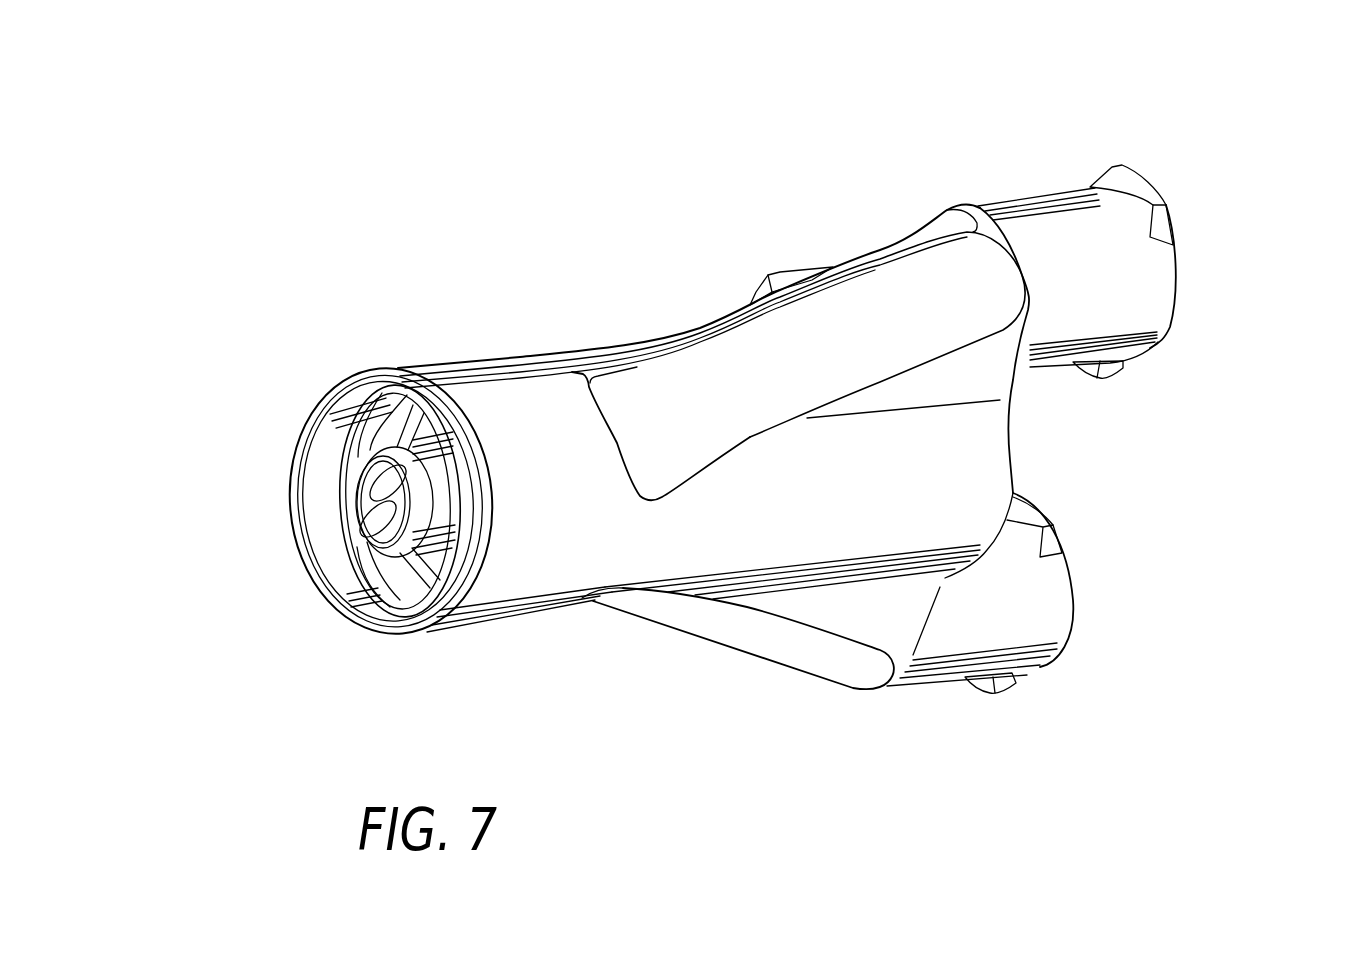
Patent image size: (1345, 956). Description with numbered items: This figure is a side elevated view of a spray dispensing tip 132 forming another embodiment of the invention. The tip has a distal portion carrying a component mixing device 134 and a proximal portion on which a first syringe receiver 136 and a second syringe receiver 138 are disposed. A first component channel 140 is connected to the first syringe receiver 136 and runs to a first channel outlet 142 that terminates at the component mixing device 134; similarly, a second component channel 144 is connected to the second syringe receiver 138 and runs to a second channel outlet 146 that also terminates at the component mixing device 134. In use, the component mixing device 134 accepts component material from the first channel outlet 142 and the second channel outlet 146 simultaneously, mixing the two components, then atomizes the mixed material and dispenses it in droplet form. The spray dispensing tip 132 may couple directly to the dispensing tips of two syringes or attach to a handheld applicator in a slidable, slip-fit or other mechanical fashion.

The spray dispensing tip 132 is at (295, 165).
The component mixing device 134 is at (322, 513).
The first syringe receiver 136 is at (1212, 273).
The second syringe receiver 138 is at (1104, 586).
The first component channel 140 is at (733, 372).
The first channel outlet 142 is at (610, 422).
The second component channel 144 is at (747, 633).
The second channel outlet 146 is at (593, 600).